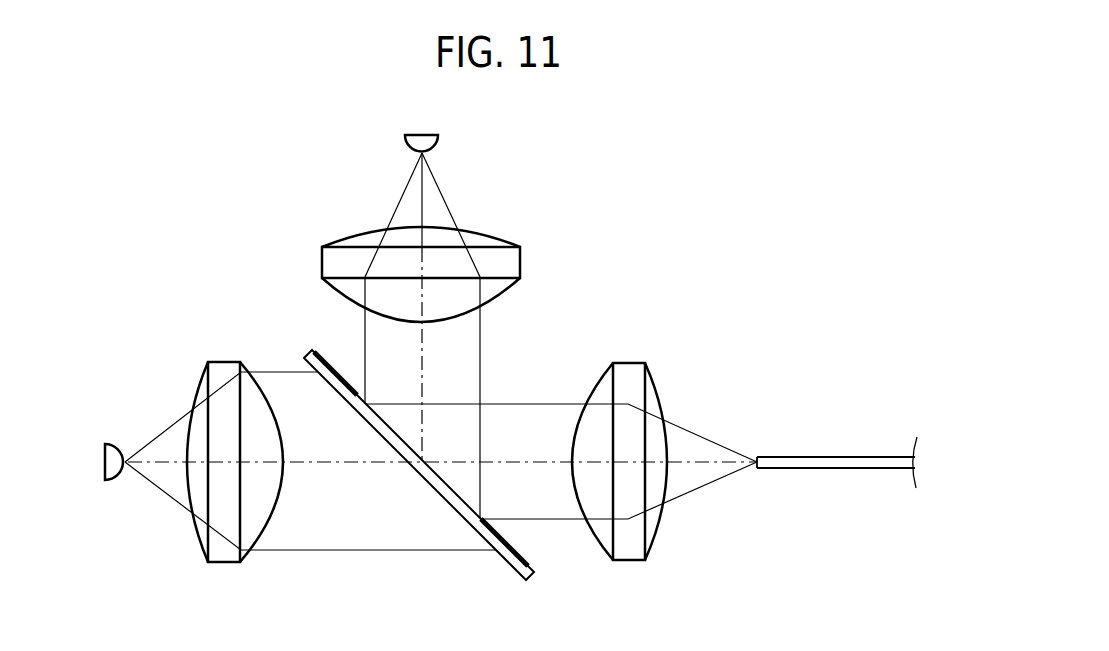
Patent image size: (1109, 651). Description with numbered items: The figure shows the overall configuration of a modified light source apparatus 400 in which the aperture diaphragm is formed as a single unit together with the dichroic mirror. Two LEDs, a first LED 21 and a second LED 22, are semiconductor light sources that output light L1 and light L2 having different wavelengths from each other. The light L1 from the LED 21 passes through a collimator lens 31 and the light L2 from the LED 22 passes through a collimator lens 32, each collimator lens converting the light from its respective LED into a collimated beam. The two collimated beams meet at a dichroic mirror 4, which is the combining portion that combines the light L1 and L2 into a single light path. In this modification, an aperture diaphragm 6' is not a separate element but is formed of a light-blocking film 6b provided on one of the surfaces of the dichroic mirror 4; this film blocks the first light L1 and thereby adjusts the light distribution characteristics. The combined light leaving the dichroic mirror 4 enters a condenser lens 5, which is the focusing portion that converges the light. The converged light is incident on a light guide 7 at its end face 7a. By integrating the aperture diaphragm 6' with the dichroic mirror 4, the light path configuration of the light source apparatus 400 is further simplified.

The light source apparatus 400 is at (697, 267).
The LED 21 is at (112, 440).
The first light L1 is at (160, 491).
The collimator lens 31 is at (224, 360).
The aperture diaphragm 6' is at (400, 444).
The dichroic mirror 4 is at (502, 564).
The light-blocking film 6b is at (327, 358).
The LED 22 is at (440, 143).
The second light L2 is at (445, 198).
The collimator lens 32 is at (521, 262).
The condenser lens 5 is at (628, 361).
The light guide end face 7a is at (757, 454).
The light guide 7 is at (832, 456).